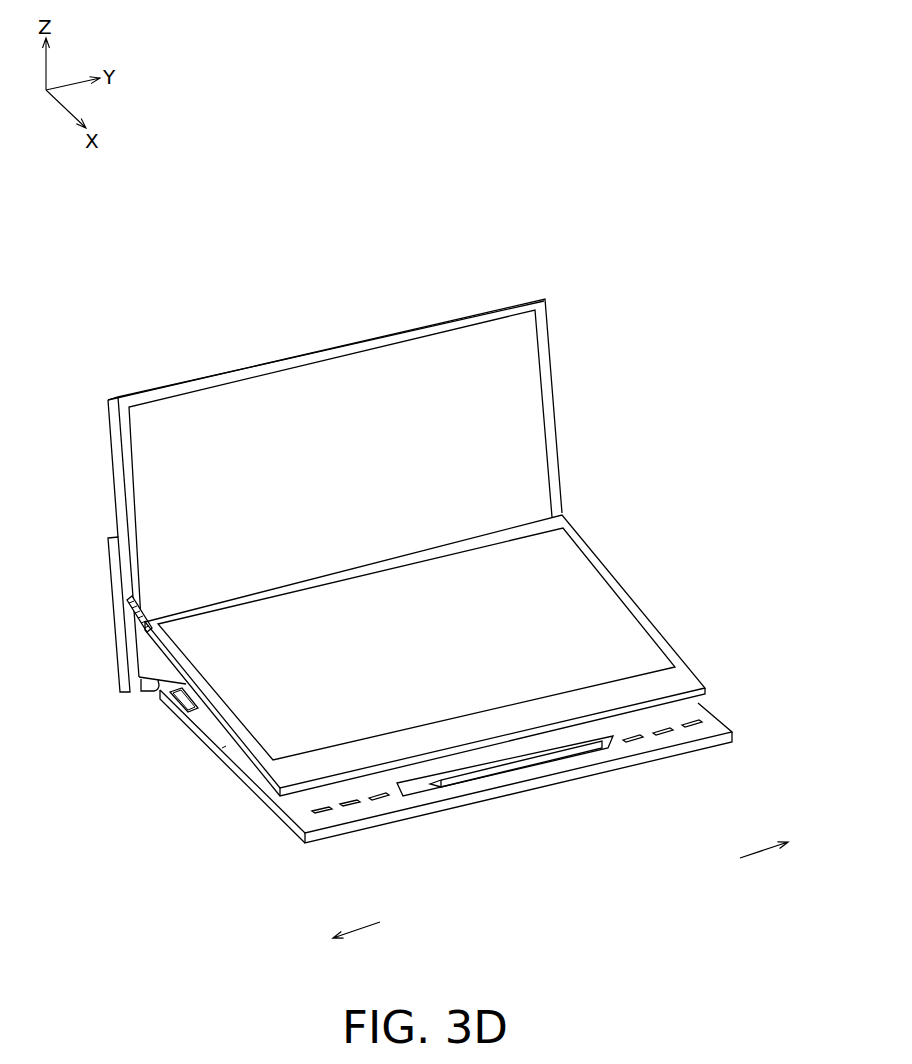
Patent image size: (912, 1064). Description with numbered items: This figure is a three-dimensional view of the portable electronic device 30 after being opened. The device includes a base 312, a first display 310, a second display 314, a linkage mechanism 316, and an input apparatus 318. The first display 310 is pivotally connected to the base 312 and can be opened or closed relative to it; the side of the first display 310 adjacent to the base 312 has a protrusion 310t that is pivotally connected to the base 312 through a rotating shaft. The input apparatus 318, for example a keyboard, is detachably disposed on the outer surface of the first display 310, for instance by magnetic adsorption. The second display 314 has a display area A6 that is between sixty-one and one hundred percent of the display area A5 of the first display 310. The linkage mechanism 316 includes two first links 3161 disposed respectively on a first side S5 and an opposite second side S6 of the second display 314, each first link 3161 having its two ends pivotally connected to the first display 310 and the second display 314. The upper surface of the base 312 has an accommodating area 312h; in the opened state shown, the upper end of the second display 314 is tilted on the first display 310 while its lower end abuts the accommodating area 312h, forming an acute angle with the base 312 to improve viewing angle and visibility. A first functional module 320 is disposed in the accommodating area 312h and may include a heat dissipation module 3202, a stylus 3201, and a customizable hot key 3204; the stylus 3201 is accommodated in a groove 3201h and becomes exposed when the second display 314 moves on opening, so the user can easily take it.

The portable electronic device 30 is at (816, 223).
The first display 310 is at (576, 363).
The display area of the first display A5 is at (443, 357).
The protrusion 310t is at (150, 687).
The input apparatus 318 is at (120, 637).
The linkage mechanism 316 is at (83, 591).
The first link 3161 is at (120, 612).
The second display 314 is at (625, 539).
The display area of the second display A6 is at (600, 623).
The base 312 is at (258, 822).
The accommodating area 312h is at (218, 744).
The first functional module 320 is at (125, 990).
The stylus 3201 is at (538, 757).
The groove 3201h is at (418, 796).
The heat dissipation module 3202 is at (183, 697).
The customizable hot key 3204 is at (382, 798).
The first side S5 is at (359, 942).
The second side S6 is at (764, 862).